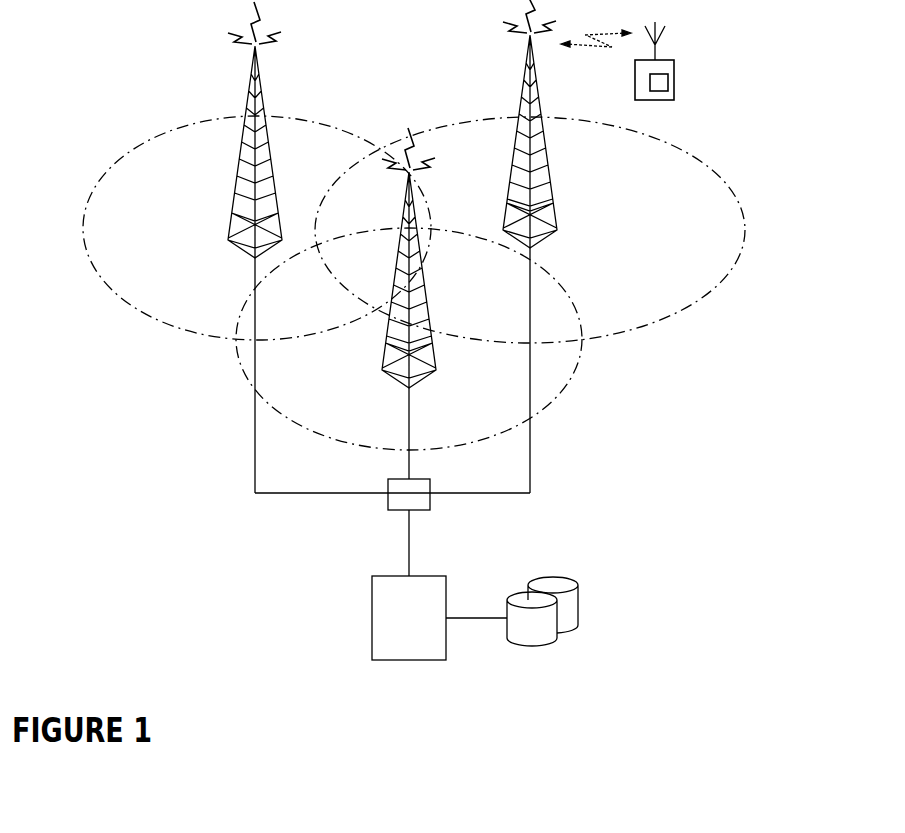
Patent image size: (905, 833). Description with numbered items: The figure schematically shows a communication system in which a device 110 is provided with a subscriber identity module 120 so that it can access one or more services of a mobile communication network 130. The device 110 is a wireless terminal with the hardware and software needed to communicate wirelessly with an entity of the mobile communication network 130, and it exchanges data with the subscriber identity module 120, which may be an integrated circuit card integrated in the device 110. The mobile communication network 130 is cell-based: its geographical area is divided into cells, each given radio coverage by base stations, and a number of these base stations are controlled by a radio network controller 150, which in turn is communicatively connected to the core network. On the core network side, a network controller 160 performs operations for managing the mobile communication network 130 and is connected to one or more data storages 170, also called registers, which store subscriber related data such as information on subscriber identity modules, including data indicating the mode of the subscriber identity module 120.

The device 110 is at (674, 60).
The subscriber identity module 120 is at (668, 82).
The mobile communication network 130 is at (123, 462).
The radio network controller 150 is at (388, 508).
The network controller 160 is at (372, 632).
The data storage 170 is at (578, 584).